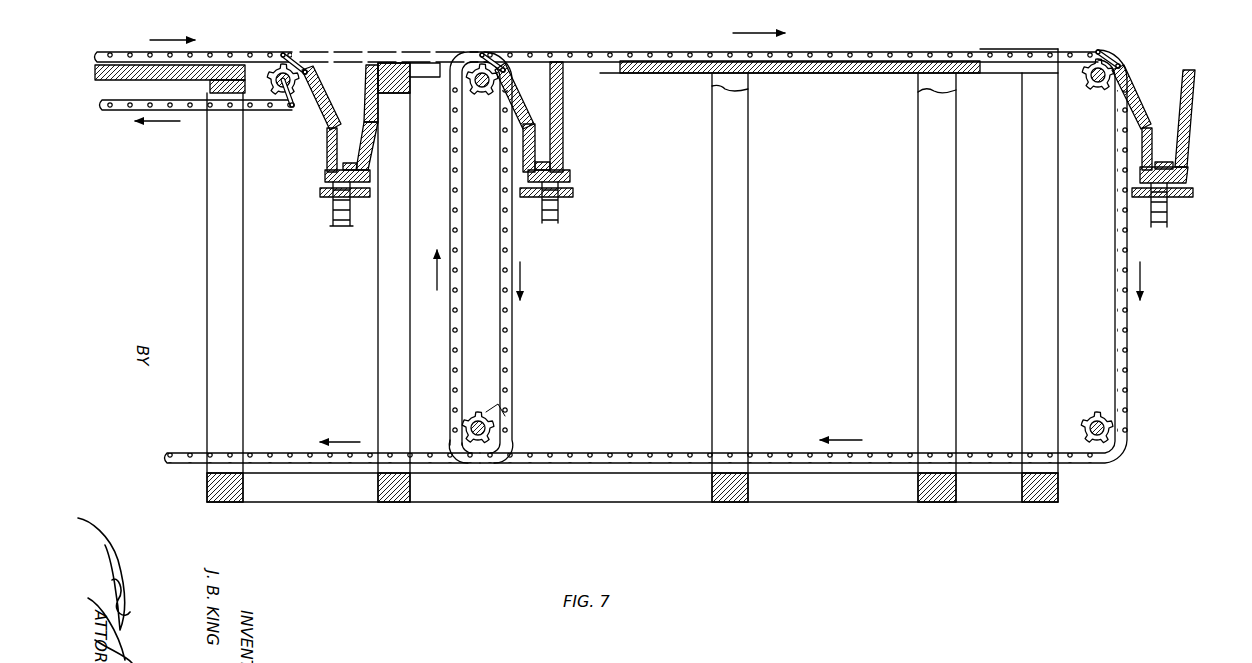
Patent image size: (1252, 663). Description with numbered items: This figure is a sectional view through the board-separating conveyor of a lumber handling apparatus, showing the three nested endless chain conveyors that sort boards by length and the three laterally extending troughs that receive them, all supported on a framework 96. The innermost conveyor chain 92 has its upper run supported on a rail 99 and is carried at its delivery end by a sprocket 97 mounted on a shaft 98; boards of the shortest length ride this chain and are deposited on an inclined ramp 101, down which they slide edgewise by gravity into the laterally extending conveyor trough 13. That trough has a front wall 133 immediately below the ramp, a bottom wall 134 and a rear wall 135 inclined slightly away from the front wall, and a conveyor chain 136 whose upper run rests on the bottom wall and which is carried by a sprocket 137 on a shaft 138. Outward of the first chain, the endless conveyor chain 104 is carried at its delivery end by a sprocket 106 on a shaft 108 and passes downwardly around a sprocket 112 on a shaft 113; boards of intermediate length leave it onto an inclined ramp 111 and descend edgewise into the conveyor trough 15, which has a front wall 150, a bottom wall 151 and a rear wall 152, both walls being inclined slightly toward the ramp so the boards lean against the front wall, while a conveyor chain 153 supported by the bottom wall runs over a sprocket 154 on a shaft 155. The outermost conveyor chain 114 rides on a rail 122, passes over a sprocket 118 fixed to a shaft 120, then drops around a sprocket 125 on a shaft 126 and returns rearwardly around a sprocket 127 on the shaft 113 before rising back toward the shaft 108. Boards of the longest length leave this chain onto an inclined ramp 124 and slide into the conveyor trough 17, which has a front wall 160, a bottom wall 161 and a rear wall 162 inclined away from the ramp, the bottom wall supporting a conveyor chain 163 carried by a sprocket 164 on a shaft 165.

The laterally extending conveyor trough 13 is at (322, 155).
The laterally extending conveyor trough 15 is at (566, 136).
The laterally extending conveyor trough 17 is at (1190, 152).
The conveyor chain 92 is at (222, 42).
The framework 96 is at (244, 358).
The sprocket 97 is at (280, 112).
The shaft 98 is at (294, 42).
The rail 99 is at (147, 80).
The inclined ramp 101 is at (318, 116).
The conveyor chain 104 is at (412, 42).
The sprocket 106 is at (494, 100).
The shaft 108 is at (490, 42).
The inclined ramp 111 is at (516, 92).
The sprocket 112 is at (500, 436).
The shaft 113 is at (488, 428).
The conveyor chain 114 is at (952, 52).
The sprocket 118 is at (1090, 98).
The shaft 120 is at (1112, 58).
The rail 122 is at (892, 75).
The inclined ramp 124 is at (1136, 88).
The sprocket 125 is at (1115, 418).
The shaft 126 is at (1110, 430).
The sprocket 127 is at (490, 404).
The front wall 133 is at (326, 145).
The bottom wall 134 is at (371, 175).
The rear wall 135 is at (378, 122).
The conveyor chain 136 is at (370, 152).
The sprocket 137 is at (330, 200).
The shaft 138 is at (320, 192).
The front wall 150 is at (523, 146).
The bottom wall 151 is at (570, 175).
The rear wall 152 is at (563, 118).
The conveyor chain 153 is at (560, 157).
The sprocket 154 is at (560, 214).
The shaft 155 is at (572, 194).
The front wall 160 is at (1142, 148).
The bottom wall 161 is at (1185, 178).
The rear wall 162 is at (1192, 124).
The conveyor chain 163 is at (1180, 166).
The sprocket 164 is at (1166, 220).
The shaft 165 is at (1190, 198).